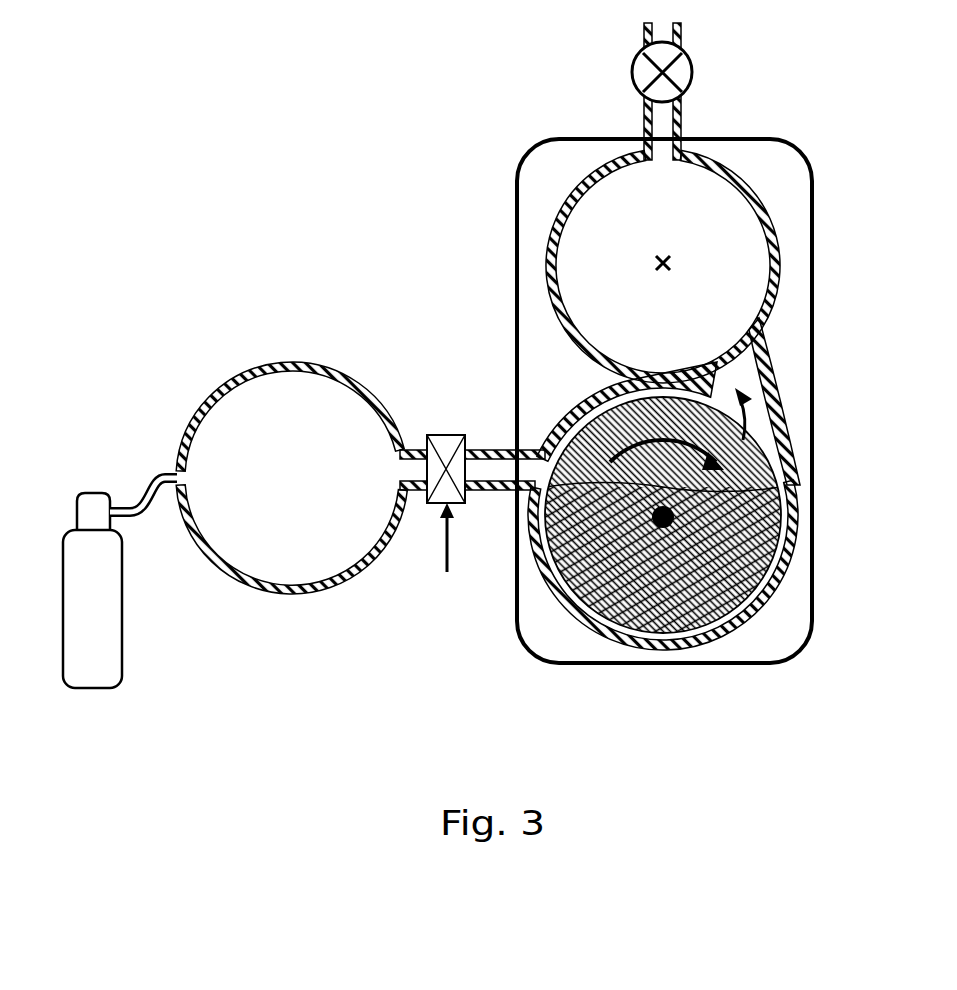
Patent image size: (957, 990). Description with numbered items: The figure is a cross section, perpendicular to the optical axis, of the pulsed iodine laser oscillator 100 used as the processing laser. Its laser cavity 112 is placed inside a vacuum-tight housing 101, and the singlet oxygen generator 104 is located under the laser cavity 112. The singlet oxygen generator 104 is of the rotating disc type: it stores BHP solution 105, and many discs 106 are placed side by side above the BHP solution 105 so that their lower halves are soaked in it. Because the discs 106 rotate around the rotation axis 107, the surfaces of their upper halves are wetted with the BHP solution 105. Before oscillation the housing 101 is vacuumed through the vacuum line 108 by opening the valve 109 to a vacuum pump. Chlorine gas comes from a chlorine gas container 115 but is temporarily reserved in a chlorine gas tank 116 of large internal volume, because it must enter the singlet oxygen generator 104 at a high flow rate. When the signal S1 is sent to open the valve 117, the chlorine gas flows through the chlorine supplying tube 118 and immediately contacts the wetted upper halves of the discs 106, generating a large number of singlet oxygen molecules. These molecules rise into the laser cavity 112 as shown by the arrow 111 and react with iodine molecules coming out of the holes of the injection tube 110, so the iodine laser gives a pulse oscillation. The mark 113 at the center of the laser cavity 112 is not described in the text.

The pulsed iodine laser oscillator 100 is at (546, 98).
The vacuum-tight housing 101 is at (527, 157).
The singlet oxygen generator 104 is at (575, 405).
The BHP solution 105 is at (645, 651).
The discs 106 is at (755, 460).
The rotation axis 107 is at (770, 532).
The vacuum line 108 is at (683, 117).
The valve 109 is at (692, 72).
The injection tube 110 is at (760, 345).
The arrow 111 is at (748, 416).
The laser cavity 112 is at (560, 212).
The hopper center 113 is at (655, 262).
The chlorine gas container 115 is at (110, 612).
The chlorine gas tank 116 is at (290, 361).
The valve 117 is at (447, 435).
The chlorine supplying tube 118 is at (495, 450).
The signal S1 is at (447, 553).